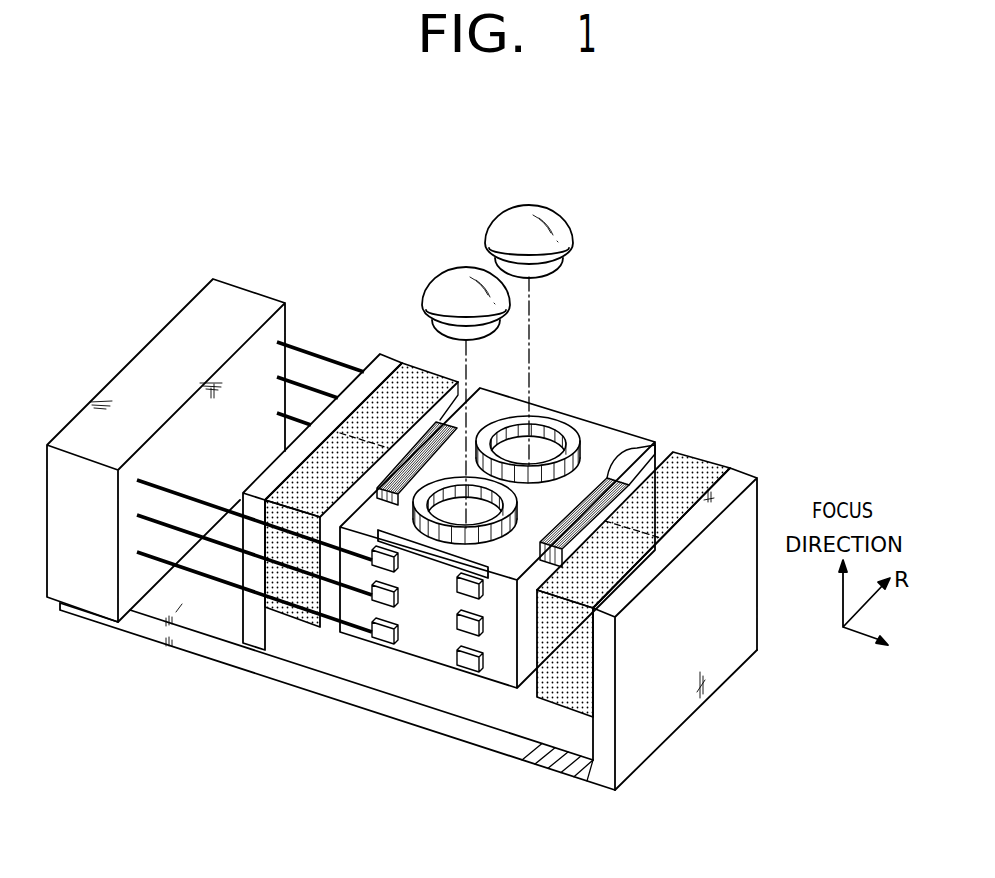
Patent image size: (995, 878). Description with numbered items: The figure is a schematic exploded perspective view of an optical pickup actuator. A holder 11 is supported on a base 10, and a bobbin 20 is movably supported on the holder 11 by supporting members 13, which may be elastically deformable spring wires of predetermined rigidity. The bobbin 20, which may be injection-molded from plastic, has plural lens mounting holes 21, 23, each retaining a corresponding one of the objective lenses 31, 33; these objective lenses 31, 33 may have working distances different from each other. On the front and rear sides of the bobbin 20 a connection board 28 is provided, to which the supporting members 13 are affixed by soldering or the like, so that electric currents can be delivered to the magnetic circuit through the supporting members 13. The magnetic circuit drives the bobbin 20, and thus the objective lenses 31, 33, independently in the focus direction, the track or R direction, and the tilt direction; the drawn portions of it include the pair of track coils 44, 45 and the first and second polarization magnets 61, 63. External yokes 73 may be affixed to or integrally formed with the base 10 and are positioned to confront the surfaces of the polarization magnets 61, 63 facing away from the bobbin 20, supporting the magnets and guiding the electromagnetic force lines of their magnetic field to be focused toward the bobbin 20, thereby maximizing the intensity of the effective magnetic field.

The base 10 is at (200, 647).
The holder 11 is at (133, 377).
The supporting members 13 is at (153, 556).
The bobbin 20 is at (613, 445).
The lens mounting hole 21 is at (573, 412).
The lens mounting hole 23 is at (455, 507).
The connection board 28 is at (422, 602).
The objective lens 31 is at (500, 229).
The objective lens 33 is at (445, 276).
The track coil 44 is at (646, 452).
The track coil 45 is at (368, 374).
The first polarization magnet 61 is at (700, 477).
The second polarization magnet 63 is at (420, 447).
The external yoke 73 is at (612, 702).